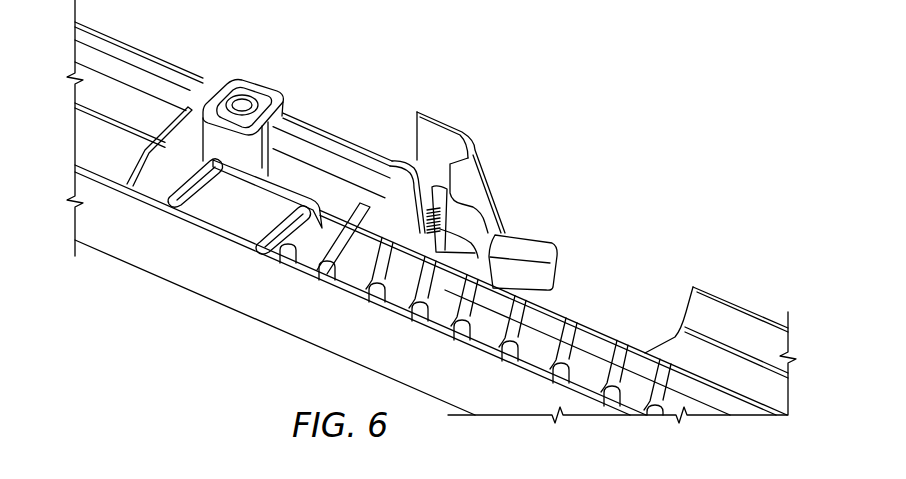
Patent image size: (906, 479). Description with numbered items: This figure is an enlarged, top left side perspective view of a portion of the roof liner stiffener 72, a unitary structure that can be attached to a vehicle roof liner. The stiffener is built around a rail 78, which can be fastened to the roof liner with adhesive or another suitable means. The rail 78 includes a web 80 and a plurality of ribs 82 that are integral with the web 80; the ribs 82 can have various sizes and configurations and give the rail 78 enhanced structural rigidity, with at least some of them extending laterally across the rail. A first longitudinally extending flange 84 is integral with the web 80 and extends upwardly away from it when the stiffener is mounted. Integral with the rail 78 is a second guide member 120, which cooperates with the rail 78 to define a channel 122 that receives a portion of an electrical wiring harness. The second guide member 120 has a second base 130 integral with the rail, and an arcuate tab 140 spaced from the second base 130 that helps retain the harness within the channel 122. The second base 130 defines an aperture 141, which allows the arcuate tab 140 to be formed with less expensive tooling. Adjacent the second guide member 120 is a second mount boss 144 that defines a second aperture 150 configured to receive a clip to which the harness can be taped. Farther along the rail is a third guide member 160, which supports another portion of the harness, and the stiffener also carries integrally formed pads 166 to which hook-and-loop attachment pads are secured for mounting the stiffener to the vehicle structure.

The roof liner stiffener 72 is at (167, 334).
The rail 78 is at (125, 266).
The web 80 is at (115, 158).
The ribs 82 is at (453, 323).
The first longitudinally extending flange 84 is at (253, 302).
The second guide member 120 is at (482, 140).
The channel 122 is at (525, 279).
The second base 130 is at (412, 159).
The arcuate tab 140 is at (473, 177).
The aperture 141 is at (489, 239).
The second mount boss 144 is at (267, 98).
The second aperture 150 is at (242, 101).
The third guide member 160 is at (697, 317).
The pads 166 is at (220, 212).